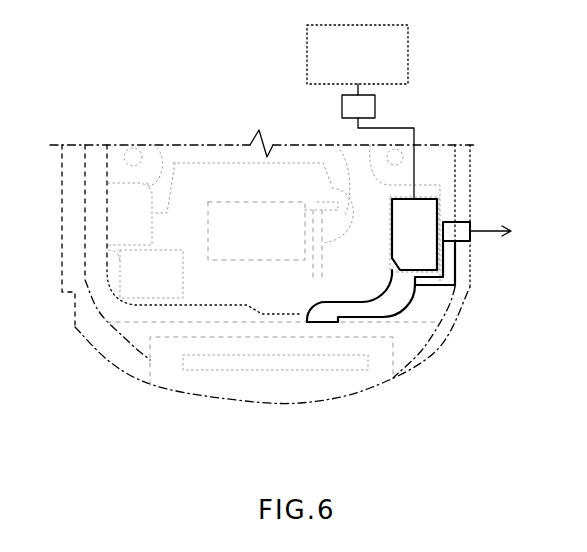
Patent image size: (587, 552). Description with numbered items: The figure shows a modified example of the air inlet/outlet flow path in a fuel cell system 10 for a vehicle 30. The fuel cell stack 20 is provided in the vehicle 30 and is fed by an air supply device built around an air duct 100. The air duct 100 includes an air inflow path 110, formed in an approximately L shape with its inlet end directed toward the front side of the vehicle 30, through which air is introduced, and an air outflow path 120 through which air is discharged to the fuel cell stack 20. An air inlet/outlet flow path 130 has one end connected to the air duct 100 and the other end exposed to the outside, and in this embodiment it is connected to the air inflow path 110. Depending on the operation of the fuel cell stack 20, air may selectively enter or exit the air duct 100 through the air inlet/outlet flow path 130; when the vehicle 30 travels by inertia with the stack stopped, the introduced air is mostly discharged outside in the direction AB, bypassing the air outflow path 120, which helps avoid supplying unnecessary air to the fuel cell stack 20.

The fuel cell system 10 is at (80, 72).
The fuel cell stack 20 is at (408, 52).
The vehicle 30 is at (370, 388).
The air duct 100 is at (443, 211).
The air inflow path 110 is at (358, 318).
The air outflow path 120 is at (414, 163).
The air inlet/outlet flow path 130 is at (463, 242).
The air discharge direction AB is at (485, 235).